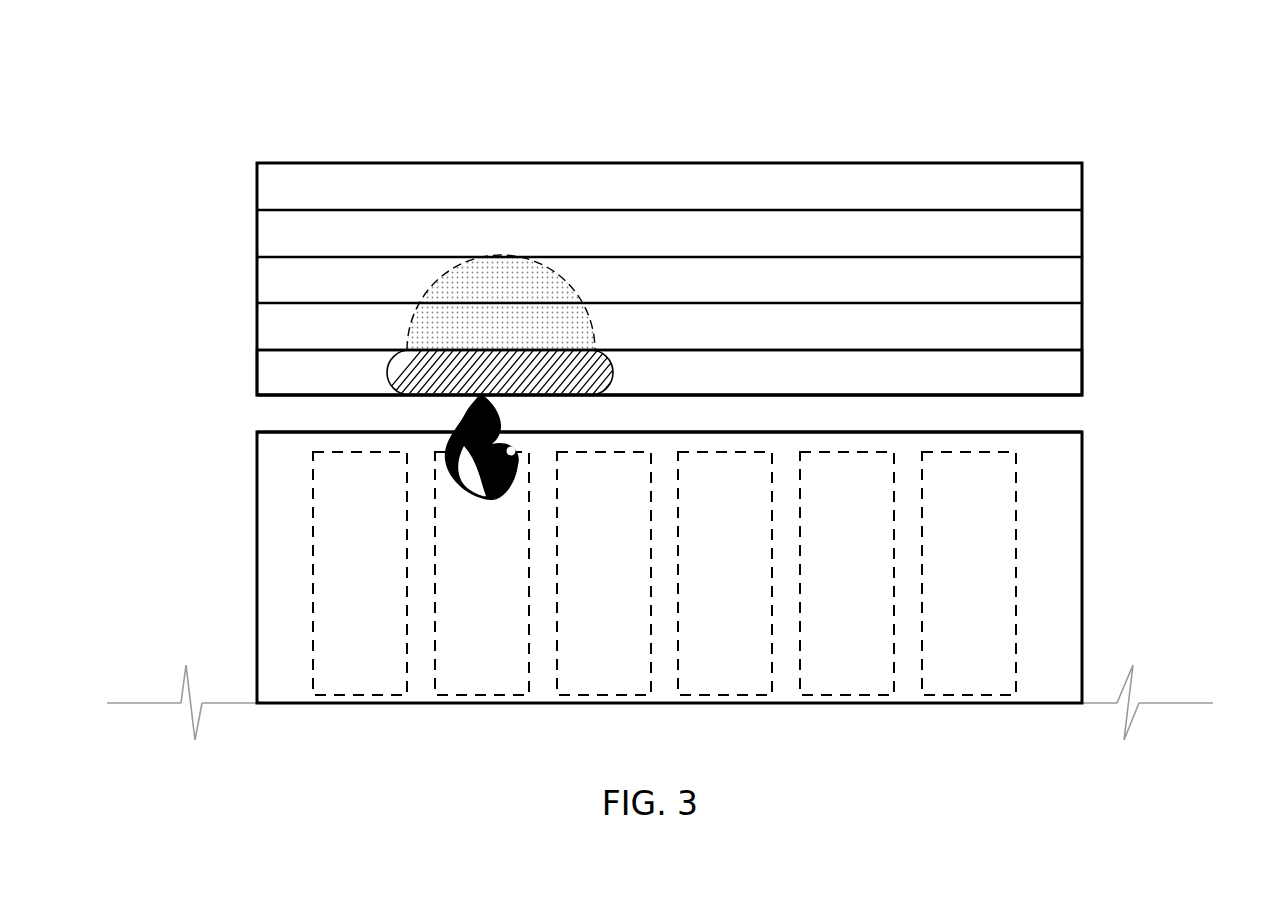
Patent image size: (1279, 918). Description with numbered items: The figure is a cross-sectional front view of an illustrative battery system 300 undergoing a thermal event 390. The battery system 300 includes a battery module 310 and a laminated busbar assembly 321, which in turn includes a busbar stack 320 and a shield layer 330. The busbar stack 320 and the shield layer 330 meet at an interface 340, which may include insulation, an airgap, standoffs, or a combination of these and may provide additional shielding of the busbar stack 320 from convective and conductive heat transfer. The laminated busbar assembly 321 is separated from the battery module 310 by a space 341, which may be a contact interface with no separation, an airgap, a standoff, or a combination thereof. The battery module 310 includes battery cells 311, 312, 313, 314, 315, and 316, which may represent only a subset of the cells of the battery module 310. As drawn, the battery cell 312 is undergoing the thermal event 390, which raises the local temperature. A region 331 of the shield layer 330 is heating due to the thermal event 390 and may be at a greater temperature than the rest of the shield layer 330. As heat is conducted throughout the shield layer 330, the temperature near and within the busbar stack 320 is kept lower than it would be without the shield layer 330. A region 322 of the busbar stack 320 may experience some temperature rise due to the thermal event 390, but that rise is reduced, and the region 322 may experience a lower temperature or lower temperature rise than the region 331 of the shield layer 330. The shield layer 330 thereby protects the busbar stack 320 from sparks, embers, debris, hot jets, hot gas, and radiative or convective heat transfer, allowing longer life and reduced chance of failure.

The battery system 300 is at (632, 49).
The battery module 310 is at (1082, 472).
The battery cell 311 is at (330, 587).
The battery cell 312 is at (452, 587).
The battery cell 313 is at (574, 587).
The battery cell 314 is at (696, 587).
The battery cell 315 is at (818, 587).
The battery cell 316 is at (939, 587).
The busbar stack 320 is at (215, 163).
The laminated busbar assembly 321 is at (707, 276).
The region of busbar stack 322 is at (501, 302).
The shield layer 330 is at (257, 370).
The region of shield layer 331 is at (513, 370).
The interface 340 is at (1082, 350).
The space 341 is at (257, 412).
The thermal event 390 is at (443, 460).